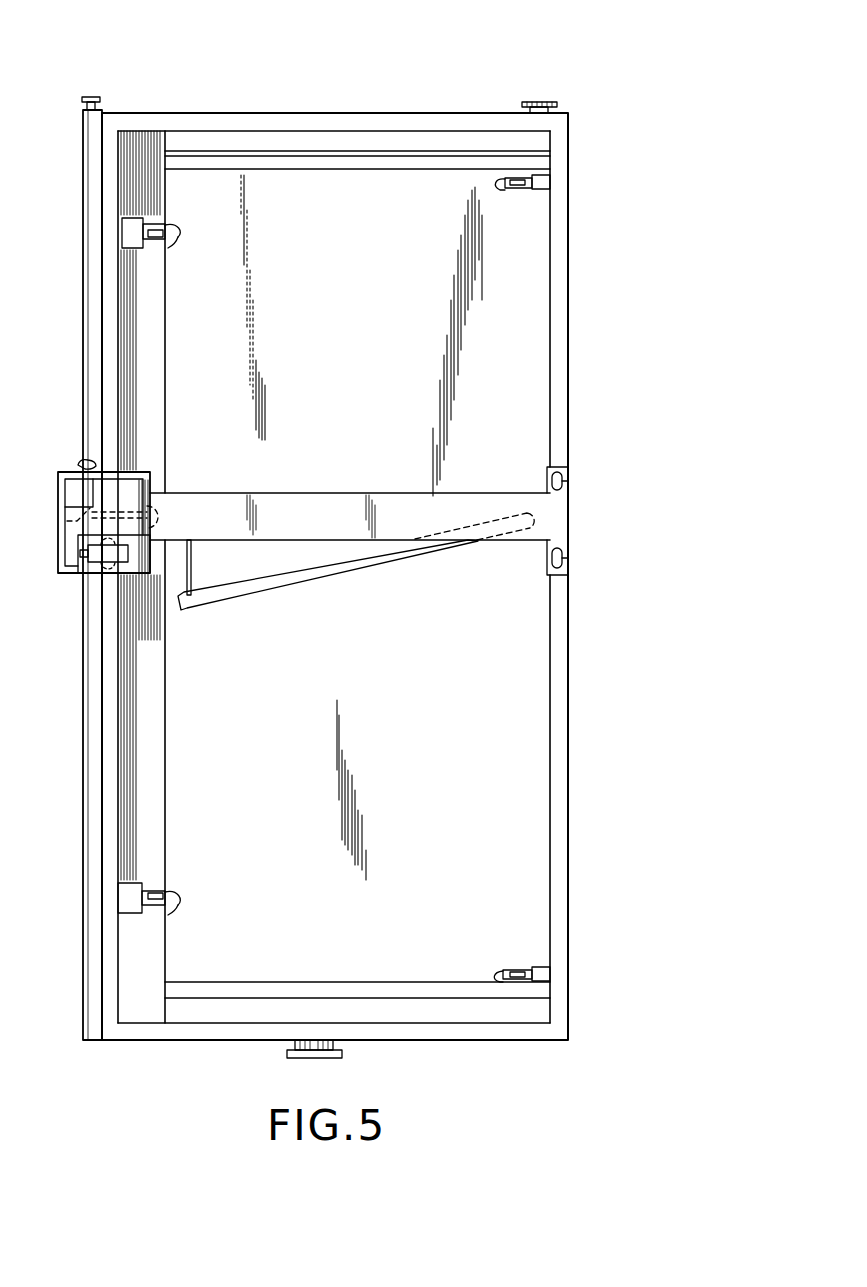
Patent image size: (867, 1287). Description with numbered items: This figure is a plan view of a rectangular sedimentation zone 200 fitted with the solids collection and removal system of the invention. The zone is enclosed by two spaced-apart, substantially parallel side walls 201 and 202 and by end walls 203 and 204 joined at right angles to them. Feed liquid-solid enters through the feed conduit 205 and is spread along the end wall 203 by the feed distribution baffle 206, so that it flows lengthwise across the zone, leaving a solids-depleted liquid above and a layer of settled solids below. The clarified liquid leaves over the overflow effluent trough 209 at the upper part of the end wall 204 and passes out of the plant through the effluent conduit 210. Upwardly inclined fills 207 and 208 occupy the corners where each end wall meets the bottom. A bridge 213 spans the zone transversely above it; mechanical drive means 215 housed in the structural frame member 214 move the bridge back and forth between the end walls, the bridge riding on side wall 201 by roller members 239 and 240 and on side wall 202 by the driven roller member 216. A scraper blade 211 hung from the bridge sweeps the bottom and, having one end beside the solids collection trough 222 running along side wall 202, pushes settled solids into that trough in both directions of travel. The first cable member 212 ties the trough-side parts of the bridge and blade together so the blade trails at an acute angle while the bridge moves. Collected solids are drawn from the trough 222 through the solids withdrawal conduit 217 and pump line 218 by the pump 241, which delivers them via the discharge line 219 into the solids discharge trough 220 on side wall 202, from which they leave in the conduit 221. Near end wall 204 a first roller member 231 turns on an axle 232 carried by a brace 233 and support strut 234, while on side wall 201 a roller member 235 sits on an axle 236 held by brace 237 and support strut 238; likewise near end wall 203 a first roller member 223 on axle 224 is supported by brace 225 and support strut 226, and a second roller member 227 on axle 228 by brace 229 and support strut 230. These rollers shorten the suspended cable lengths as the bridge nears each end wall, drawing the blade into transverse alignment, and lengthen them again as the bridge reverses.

The sedimentation zone 200 is at (626, 131).
The side wall 201 is at (568, 750).
The side wall 202 is at (105, 718).
The end wall 203 is at (203, 1035).
The end wall 204 is at (378, 118).
The feed conduit 205 is at (333, 1058).
The feed distribution baffle 206 is at (445, 1014).
The upwardly inclined fill 207 is at (245, 996).
The upwardly inclined fill 208 is at (252, 158).
The overflow effluent trough 209 is at (302, 145).
The effluent conduit 210 is at (550, 103).
The scraper blade 211 is at (285, 580).
The first cable member 212 is at (192, 573).
The bridge 213 is at (303, 500).
The structural frame member 214 is at (58, 547).
The mechanical drive means 215 is at (95, 556).
The roller member 216 is at (104, 568).
The solids withdrawal conduit 217 is at (163, 518).
The pump line 218 is at (64, 530).
The discharge line 219 is at (82, 463).
The solids discharge trough 220 is at (90, 373).
The conduit 221 is at (100, 97).
The solids collection trough 222 is at (138, 795).
The first roller member 223 is at (152, 893).
The axle 224 is at (170, 894).
The brace 225 is at (175, 904).
The support strut 226 is at (128, 893).
The second roller member 227 is at (520, 969).
The axle 228 is at (509, 969).
The brace 229 is at (497, 975).
The support strut 230 is at (545, 972).
The first roller member 231 is at (155, 241).
The axle 232 is at (174, 243).
The brace 233 is at (171, 227).
The support strut 234 is at (125, 232).
The roller member 235 is at (522, 190).
The axle 236 is at (508, 189).
The brace 237 is at (497, 179).
The support strut 238 is at (548, 181).
The roller member 239 is at (571, 478).
The roller member 240 is at (571, 558).
The pump 241 is at (78, 488).